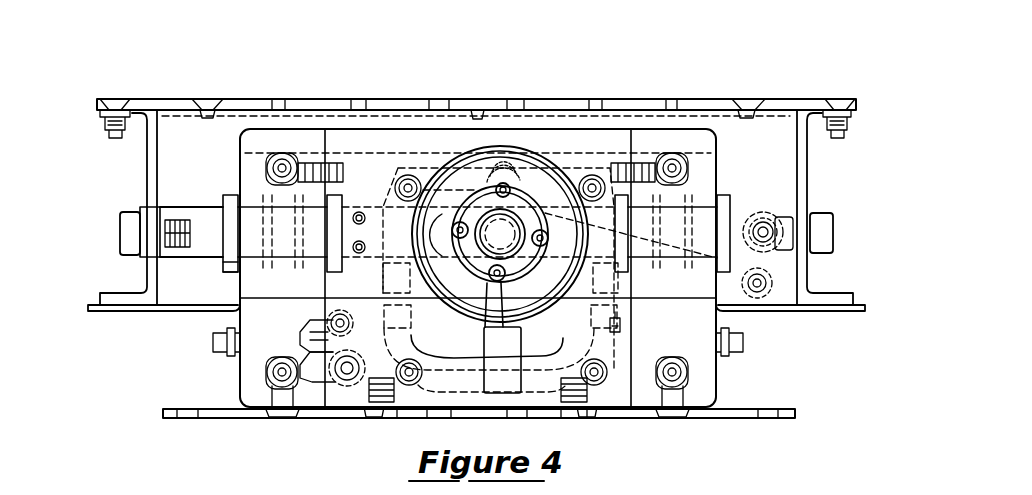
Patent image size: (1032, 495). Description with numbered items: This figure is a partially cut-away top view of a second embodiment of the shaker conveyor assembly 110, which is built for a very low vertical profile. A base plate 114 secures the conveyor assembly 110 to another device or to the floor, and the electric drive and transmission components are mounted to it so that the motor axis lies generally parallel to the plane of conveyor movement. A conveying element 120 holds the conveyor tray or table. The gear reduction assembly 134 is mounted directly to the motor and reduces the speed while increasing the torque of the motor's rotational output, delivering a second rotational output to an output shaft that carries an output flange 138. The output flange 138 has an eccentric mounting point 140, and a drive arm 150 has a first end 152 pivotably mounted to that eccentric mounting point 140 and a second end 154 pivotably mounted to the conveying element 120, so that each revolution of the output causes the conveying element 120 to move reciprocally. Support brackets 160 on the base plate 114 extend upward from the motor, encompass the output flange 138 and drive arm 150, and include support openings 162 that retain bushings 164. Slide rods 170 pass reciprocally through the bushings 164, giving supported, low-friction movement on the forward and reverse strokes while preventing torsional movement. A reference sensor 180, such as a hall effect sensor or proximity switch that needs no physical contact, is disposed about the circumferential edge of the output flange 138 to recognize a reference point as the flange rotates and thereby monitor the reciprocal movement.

The shaker conveyor assembly 110 is at (125, 88).
The base plate 114 is at (786, 409).
The conveying element 120 is at (123, 203).
The gear reduction assembly 134 is at (618, 320).
The output flange 138 is at (452, 280).
The eccentric mounting point 140 is at (543, 177).
The drive arm 150 is at (740, 202).
The first end 152 is at (455, 178).
The second end 154 is at (775, 224).
The support brackets 160 is at (240, 388).
The support openings 162 is at (238, 200).
The bushings 164 is at (220, 270).
The slide rods 170 is at (180, 257).
The reference sensor 180 is at (530, 358).